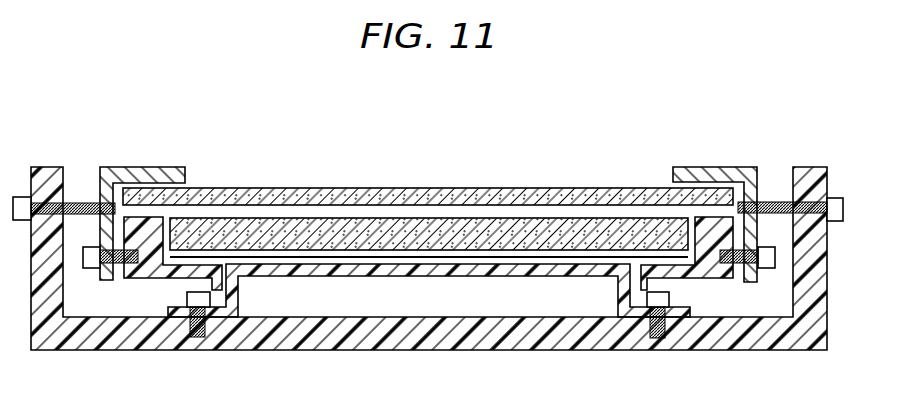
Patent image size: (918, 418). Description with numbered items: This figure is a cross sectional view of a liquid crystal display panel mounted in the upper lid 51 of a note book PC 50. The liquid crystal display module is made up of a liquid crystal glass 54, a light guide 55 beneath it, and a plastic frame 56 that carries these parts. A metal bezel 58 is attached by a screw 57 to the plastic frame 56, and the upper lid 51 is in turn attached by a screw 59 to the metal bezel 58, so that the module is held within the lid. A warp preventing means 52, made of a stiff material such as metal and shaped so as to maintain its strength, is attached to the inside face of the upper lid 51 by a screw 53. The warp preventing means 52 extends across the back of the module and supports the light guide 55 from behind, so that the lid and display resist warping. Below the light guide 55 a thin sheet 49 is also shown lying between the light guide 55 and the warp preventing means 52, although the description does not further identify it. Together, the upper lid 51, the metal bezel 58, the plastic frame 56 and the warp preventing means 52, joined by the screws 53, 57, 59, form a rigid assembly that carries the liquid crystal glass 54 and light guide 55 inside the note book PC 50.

The film sheet 49 is at (337, 262).
The note book PC 50 is at (647, 103).
The upper lid 51 is at (818, 318).
The warp preventing means 52 is at (415, 307).
The screw 53 is at (655, 338).
The liquid crystal glass 54 is at (537, 188).
The light guide 55 is at (410, 228).
The plastic frame 56 is at (710, 275).
The screw 57 is at (767, 260).
The metal bezel 58 is at (712, 167).
The screw 59 is at (845, 213).